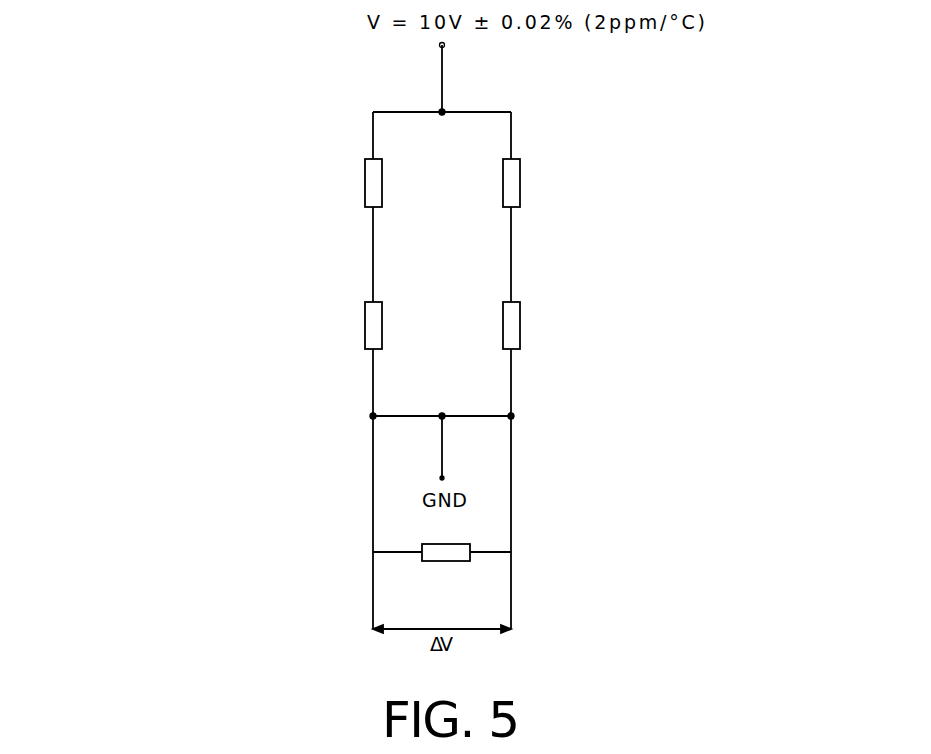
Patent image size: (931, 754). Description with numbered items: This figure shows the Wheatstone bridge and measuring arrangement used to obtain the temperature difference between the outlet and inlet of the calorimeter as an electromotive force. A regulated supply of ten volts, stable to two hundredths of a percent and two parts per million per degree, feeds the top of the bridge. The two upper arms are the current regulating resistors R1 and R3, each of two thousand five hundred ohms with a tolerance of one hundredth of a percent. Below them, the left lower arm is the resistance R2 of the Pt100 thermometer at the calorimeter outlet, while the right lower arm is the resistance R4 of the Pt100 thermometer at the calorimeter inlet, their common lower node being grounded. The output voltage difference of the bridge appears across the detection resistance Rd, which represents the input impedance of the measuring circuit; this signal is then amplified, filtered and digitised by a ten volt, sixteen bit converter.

The current regulating resistor R1 is at (211, 186).
The outlet thermometer resistance R2 is at (354, 325).
The current regulating resistor R3 is at (678, 186).
The inlet thermometer resistance R4 is at (530, 325).
The input impedance of the measuring circuit Rd is at (446, 568).